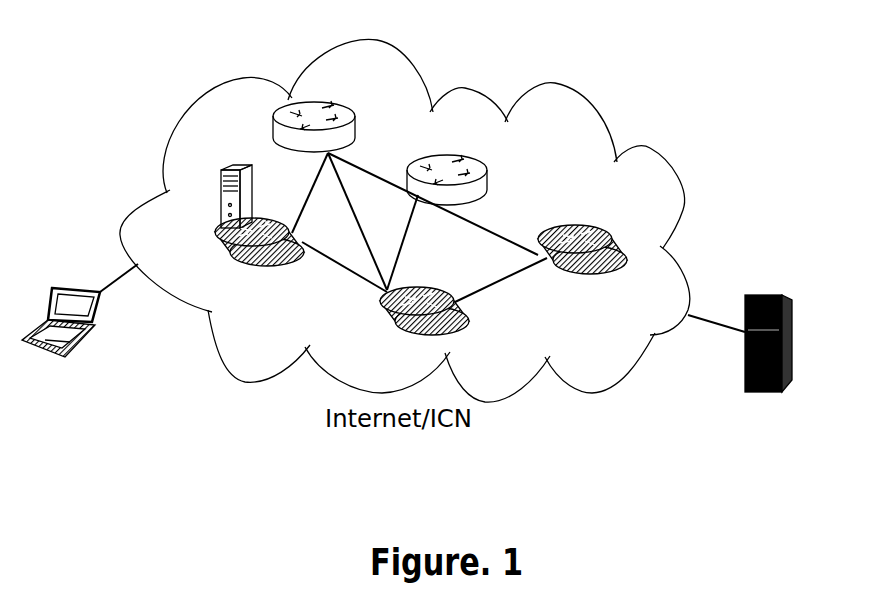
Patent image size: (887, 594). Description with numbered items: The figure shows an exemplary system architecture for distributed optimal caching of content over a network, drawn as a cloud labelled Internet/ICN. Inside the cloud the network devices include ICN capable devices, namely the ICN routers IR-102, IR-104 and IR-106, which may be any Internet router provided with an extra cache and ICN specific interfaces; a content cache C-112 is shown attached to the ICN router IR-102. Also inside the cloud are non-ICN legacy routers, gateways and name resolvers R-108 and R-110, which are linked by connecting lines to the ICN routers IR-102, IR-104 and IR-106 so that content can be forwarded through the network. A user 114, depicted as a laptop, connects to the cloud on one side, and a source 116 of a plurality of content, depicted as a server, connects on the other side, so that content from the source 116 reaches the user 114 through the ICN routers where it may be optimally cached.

The ICN router 102 is at (267, 265).
The ICN router 104 is at (446, 297).
The ICN router 106 is at (595, 233).
The non-ICN legacy router 108 is at (340, 113).
The non-ICN legacy router 110 is at (463, 163).
The content cache 112 is at (219, 183).
The user 114 is at (74, 340).
The source 116 is at (794, 364).